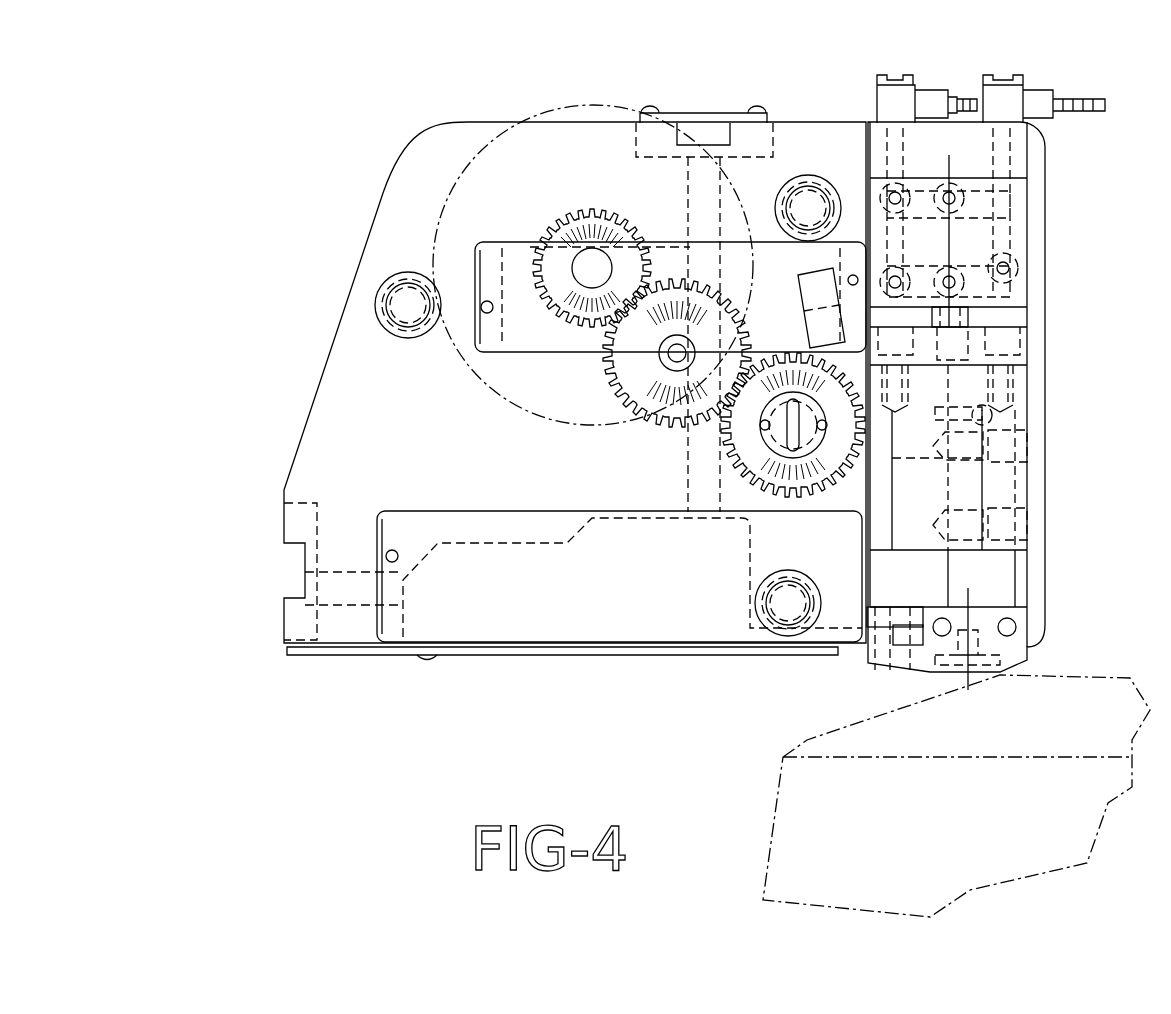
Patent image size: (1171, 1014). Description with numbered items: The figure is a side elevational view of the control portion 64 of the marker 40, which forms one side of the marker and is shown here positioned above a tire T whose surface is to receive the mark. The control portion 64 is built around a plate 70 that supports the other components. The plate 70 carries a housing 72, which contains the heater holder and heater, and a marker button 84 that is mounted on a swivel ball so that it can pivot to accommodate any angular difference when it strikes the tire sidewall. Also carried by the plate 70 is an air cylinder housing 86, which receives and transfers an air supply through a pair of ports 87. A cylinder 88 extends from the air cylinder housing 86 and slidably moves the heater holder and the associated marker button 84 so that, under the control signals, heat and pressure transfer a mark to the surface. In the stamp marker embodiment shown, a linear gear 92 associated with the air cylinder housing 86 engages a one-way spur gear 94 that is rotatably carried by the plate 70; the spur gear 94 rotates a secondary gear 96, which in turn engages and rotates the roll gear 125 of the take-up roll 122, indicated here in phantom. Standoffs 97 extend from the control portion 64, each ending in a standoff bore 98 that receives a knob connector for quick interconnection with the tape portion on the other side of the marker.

The marker 40 is at (293, 185).
The control portion 64 is at (298, 420).
The plate 70 is at (348, 457).
The housing 72 is at (882, 523).
The marker button 84 is at (982, 672).
The air cylinder housing 86 is at (955, 145).
The ports 87 is at (900, 103).
The cylinder 88 is at (957, 320).
The linear gear 92 is at (858, 484).
The one-way spur gear 94 is at (760, 450).
The secondary gear 96 is at (635, 378).
The standoffs 97 is at (380, 318).
The standoff bore 98 is at (415, 325).
The take-up roll 122 is at (485, 145).
The roll gear 125 is at (590, 215).
The tire outline T is at (773, 810).